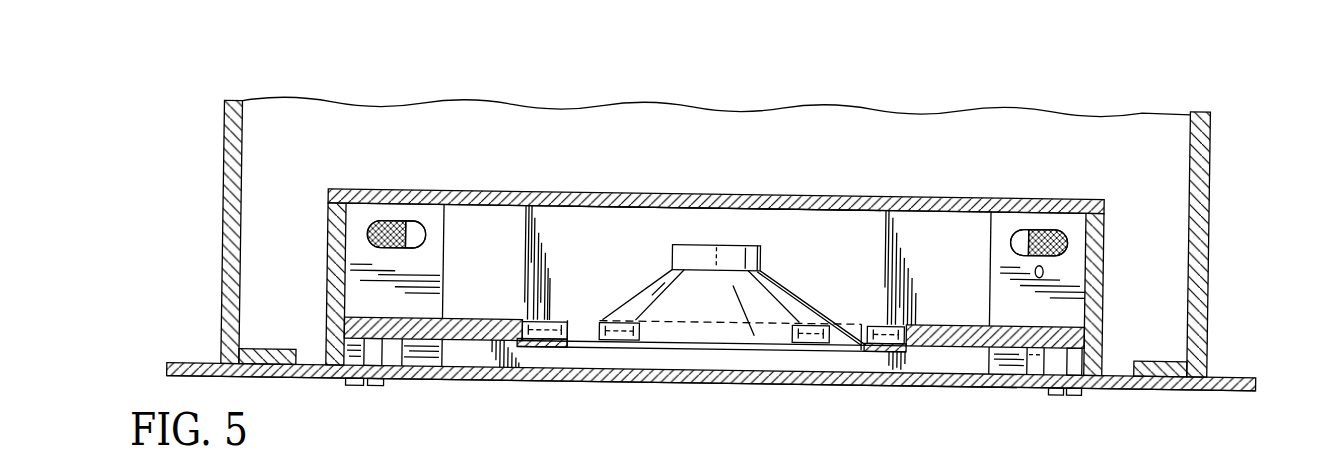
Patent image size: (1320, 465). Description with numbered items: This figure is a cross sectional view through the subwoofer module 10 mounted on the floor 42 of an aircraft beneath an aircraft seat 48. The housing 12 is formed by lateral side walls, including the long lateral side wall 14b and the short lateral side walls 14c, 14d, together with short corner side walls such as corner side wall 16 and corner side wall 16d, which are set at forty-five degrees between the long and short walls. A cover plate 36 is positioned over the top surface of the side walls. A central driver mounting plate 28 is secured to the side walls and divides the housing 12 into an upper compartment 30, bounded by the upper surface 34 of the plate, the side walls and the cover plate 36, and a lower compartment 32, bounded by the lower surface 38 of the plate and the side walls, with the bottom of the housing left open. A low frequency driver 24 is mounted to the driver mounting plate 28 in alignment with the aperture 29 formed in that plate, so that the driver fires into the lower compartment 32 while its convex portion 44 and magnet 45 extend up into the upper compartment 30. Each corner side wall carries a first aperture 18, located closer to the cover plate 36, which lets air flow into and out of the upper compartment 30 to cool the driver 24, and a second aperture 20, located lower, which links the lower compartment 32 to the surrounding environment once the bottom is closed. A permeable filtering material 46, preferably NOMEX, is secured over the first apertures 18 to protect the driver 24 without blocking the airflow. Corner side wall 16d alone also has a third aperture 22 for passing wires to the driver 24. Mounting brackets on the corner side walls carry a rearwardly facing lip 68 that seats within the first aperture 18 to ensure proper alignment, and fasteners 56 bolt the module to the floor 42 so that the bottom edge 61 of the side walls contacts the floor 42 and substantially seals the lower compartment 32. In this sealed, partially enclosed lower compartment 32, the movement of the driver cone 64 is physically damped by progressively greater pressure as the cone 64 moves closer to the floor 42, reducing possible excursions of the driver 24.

The subwoofer module 10 is at (1222, 150).
The housing 12 is at (890, 196).
The long lateral side wall 14b is at (713, 222).
The short lateral side wall 14c is at (1107, 256).
The short lateral side wall 14d is at (325, 237).
The short corner side wall 16 is at (423, 212).
The short corner side wall 16d is at (1067, 221).
The first aperture 18 is at (375, 220).
The second aperture 20 is at (373, 351).
The third aperture 22 is at (1034, 271).
The low frequency driver 24 is at (628, 296).
The central driver mounting plate 28 is at (935, 338).
The aperture 29 is at (866, 332).
The upper compartment 30 is at (640, 203).
The lower compartment 32 is at (562, 350).
The upper surface 34 is at (485, 318).
The cover plate 36 is at (530, 208).
The lower surface 38 is at (468, 341).
The floor 42 is at (790, 383).
The convex portion 44 is at (776, 281).
The magnet 45 is at (688, 258).
The permeable filtering material 46 is at (385, 221).
The aircraft seat 48 is at (223, 157).
The fasteners 56 is at (353, 387).
The bottom edge 61 is at (680, 381).
The driver cone 64 is at (817, 308).
The rearwardly facing lip 68 is at (425, 238).